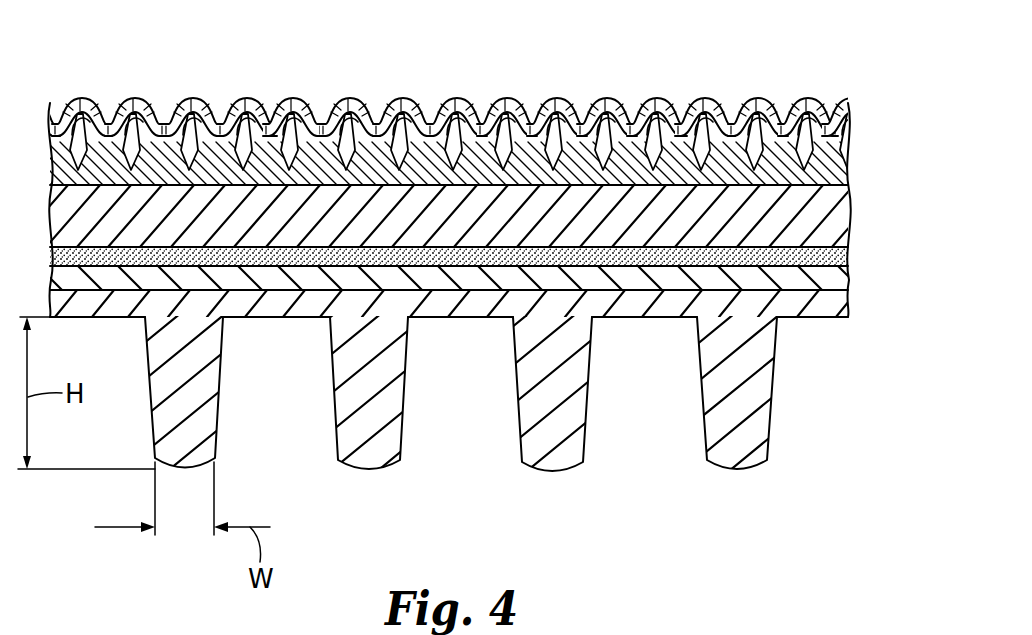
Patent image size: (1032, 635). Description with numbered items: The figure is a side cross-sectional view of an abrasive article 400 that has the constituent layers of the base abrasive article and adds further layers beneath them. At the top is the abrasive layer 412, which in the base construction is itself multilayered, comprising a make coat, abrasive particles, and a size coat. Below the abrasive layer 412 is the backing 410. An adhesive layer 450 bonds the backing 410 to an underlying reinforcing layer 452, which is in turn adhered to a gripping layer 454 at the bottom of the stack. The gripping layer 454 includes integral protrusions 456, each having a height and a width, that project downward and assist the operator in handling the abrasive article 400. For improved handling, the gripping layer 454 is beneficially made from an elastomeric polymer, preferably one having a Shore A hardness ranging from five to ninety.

The abrasive article 400 is at (466, 272).
The abrasive layer 412 is at (855, 182).
The backing 410 is at (848, 204).
The adhesive layer 450 is at (838, 256).
The reinforcing layer 452 is at (838, 280).
The gripping layer 454 is at (491, 369).
The integral protrusions 456 is at (735, 456).